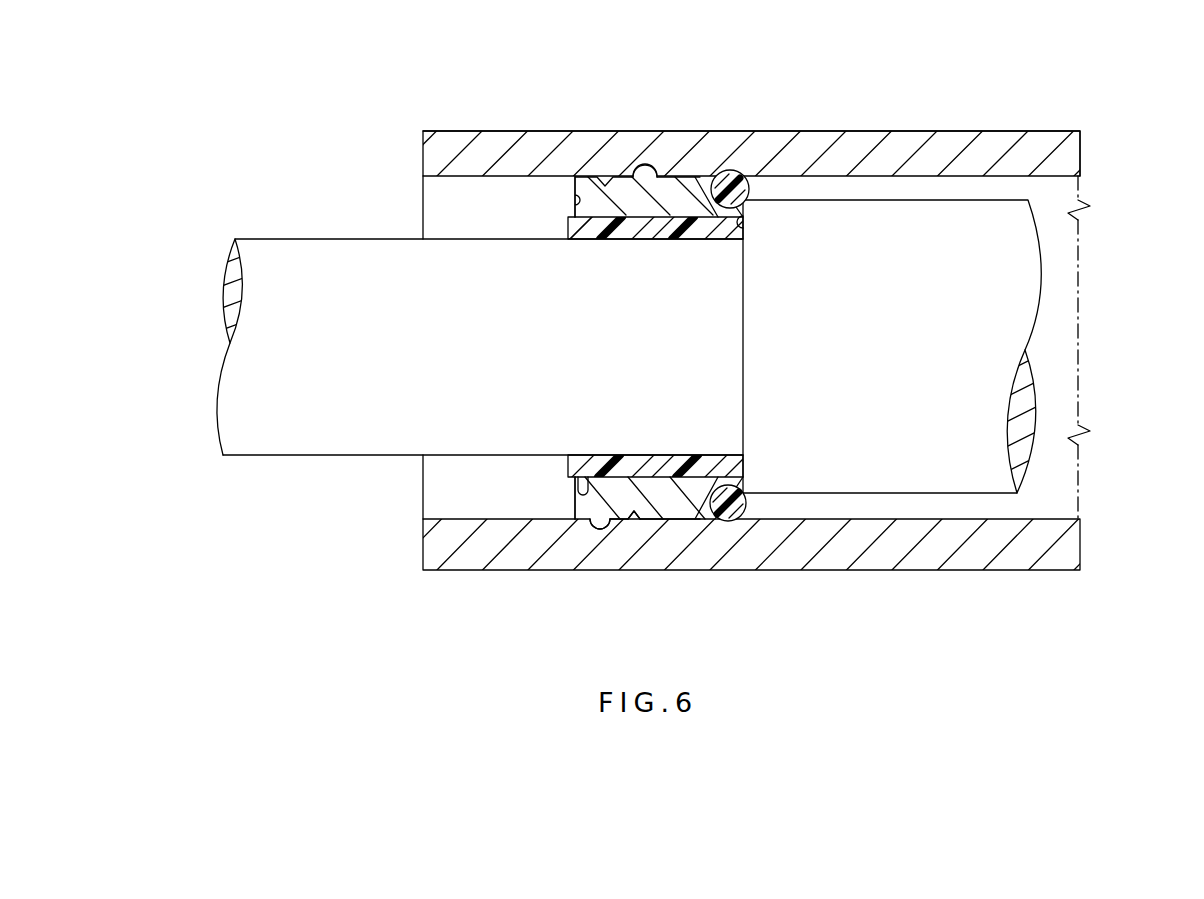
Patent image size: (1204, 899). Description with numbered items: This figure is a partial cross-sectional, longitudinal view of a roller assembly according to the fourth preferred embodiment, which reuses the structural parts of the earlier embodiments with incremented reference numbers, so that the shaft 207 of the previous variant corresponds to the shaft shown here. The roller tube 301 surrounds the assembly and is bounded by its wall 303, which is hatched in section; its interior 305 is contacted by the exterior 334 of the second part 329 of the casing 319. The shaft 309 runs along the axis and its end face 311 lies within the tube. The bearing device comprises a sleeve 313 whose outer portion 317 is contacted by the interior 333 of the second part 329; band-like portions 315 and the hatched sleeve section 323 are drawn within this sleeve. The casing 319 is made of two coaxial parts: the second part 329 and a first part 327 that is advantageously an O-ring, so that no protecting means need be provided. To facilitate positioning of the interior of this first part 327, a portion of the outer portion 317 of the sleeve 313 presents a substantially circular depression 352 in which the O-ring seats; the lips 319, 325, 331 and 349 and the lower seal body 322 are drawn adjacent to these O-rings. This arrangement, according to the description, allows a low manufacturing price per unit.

The shaft 207 is at (288, 312).
The roller tube 301 is at (1012, 152).
The housing wall 303 is at (423, 160).
The interior of the roller tube 305 is at (1040, 175).
The shaft 309 is at (340, 239).
The body end face 311 is at (745, 230).
The sleeve 313 is at (666, 198).
The spring band 315 is at (605, 183).
The outer portion of the bearing device 317 is at (585, 210).
The casing 319 is at (697, 177).
The lower seal body 322 is at (572, 493).
The sleeve hatching 323 is at (626, 232).
The O-ring seal 325 is at (706, 210).
The first part of the casing 327 is at (727, 513).
The second part of the casing 329 is at (645, 505).
The seal lip 331 is at (745, 505).
The interior of the second part 333 is at (665, 172).
The exterior of the second part 334 is at (620, 520).
The seal lip 349 is at (713, 483).
The circular depression 352 is at (722, 498).